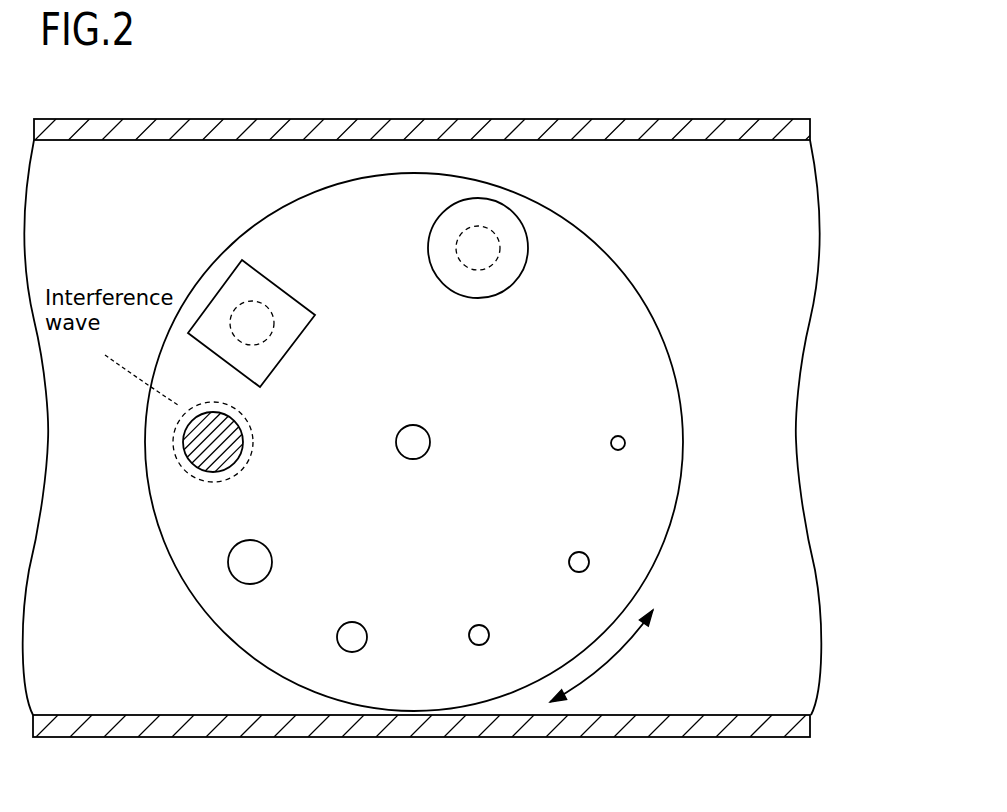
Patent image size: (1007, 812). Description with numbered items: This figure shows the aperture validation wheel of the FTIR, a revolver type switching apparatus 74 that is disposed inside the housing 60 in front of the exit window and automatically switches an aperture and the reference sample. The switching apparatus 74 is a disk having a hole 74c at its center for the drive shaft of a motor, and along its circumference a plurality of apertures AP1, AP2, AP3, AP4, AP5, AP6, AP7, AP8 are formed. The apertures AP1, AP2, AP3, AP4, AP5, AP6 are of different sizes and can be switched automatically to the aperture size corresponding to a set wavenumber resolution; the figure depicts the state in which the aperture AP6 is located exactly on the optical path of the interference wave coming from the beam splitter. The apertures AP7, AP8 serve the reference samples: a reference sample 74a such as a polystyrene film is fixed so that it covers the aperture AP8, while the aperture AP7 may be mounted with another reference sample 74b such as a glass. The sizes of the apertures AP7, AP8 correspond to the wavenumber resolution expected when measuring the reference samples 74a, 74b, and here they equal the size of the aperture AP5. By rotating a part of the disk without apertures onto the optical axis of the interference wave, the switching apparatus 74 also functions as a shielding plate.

The housing 60 is at (705, 118).
The switching apparatus 74 is at (670, 363).
The reference sample 74a is at (495, 198).
The other reference sample 74b is at (267, 277).
The hole 74c is at (432, 432).
The aperture AP1 is at (647, 457).
The aperture AP2 is at (599, 582).
The aperture AP3 is at (498, 653).
The aperture AP4 is at (357, 656).
The aperture AP5 is at (251, 582).
The aperture AP6 is at (183, 437).
The aperture AP7 is at (268, 331).
The aperture AP8 is at (500, 263).